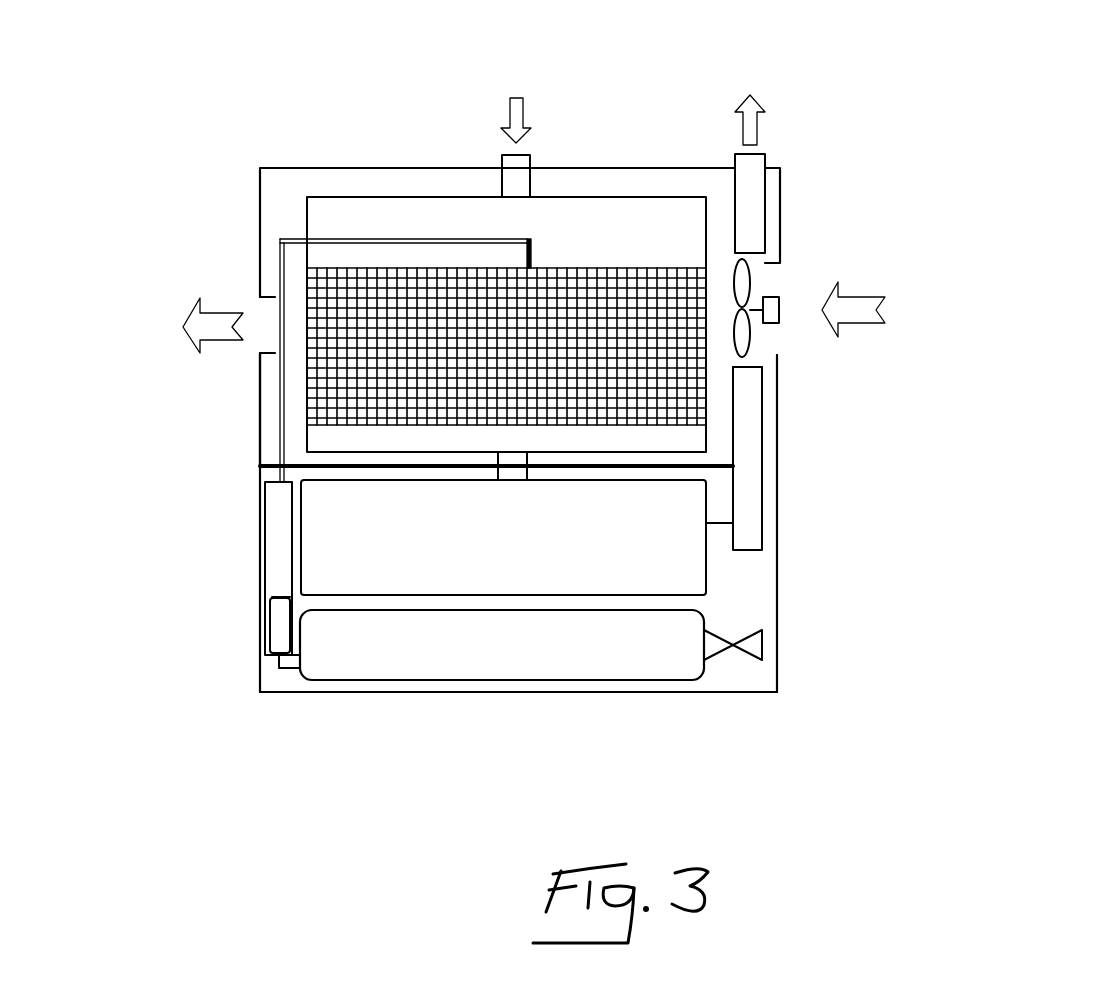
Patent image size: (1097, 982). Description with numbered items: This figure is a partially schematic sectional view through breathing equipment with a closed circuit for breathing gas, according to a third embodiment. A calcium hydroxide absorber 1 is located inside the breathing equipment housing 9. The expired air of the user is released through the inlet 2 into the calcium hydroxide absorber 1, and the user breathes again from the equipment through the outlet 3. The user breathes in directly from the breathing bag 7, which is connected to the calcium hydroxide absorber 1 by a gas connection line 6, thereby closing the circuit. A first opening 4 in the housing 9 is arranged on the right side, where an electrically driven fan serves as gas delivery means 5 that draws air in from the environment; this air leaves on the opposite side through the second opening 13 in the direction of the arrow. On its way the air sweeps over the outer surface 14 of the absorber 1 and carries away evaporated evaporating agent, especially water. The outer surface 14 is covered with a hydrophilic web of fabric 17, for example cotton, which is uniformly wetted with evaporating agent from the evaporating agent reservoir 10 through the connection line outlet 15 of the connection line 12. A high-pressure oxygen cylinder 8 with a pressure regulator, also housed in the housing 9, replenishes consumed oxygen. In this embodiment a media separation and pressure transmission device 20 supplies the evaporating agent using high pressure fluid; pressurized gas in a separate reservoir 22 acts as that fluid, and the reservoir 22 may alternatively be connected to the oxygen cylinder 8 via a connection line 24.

The calcium hydroxide absorber 1 is at (528, 262).
The inlet 2 is at (505, 195).
The outlet 3 is at (752, 152).
The first opening 4 is at (785, 270).
The gas delivery means 5 is at (775, 322).
The gas connection line 6 is at (515, 467).
The breathing bag 7 is at (568, 548).
The high-pressure oxygen cylinder 8 is at (568, 641).
The breathing equipment housing 9 is at (412, 693).
The evaporating agent reservoir 10 is at (278, 584).
The connection line 12 is at (282, 403).
The second opening 13 is at (262, 312).
The outer surface 14 is at (440, 303).
The connection line outlet 15 is at (502, 238).
The hydrophilic web of fabric 17 is at (705, 385).
The media separation and pressure transmission device 20 is at (278, 605).
The separate reservoir 22 is at (275, 640).
The connection line 24 is at (283, 668).